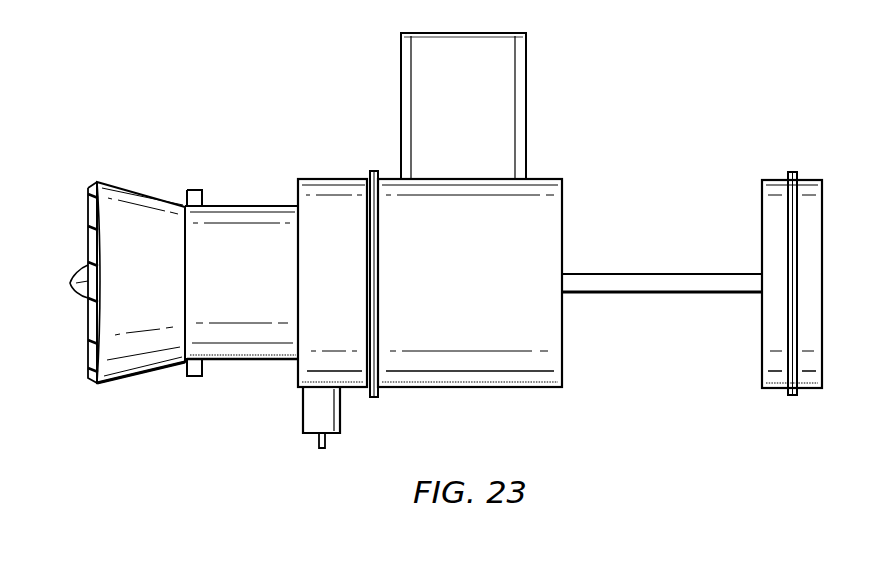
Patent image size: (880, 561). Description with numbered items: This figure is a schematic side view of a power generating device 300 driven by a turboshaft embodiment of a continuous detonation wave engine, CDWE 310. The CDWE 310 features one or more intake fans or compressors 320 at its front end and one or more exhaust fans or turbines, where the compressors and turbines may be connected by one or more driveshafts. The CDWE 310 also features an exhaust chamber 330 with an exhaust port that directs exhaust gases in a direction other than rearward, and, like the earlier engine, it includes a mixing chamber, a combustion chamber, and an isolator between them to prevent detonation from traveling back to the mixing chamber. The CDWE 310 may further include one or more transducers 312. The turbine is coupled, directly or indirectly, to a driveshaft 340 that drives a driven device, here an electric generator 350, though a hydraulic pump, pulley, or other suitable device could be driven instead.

The power generating device 300 is at (348, 76).
The CDWE 310 is at (335, 178).
The transducer 312 is at (303, 411).
The intake fan or compressor 320 is at (89, 357).
The exhaust chamber 330 is at (478, 388).
The driveshaft 340 is at (661, 273).
The electric generator 350 is at (770, 389).